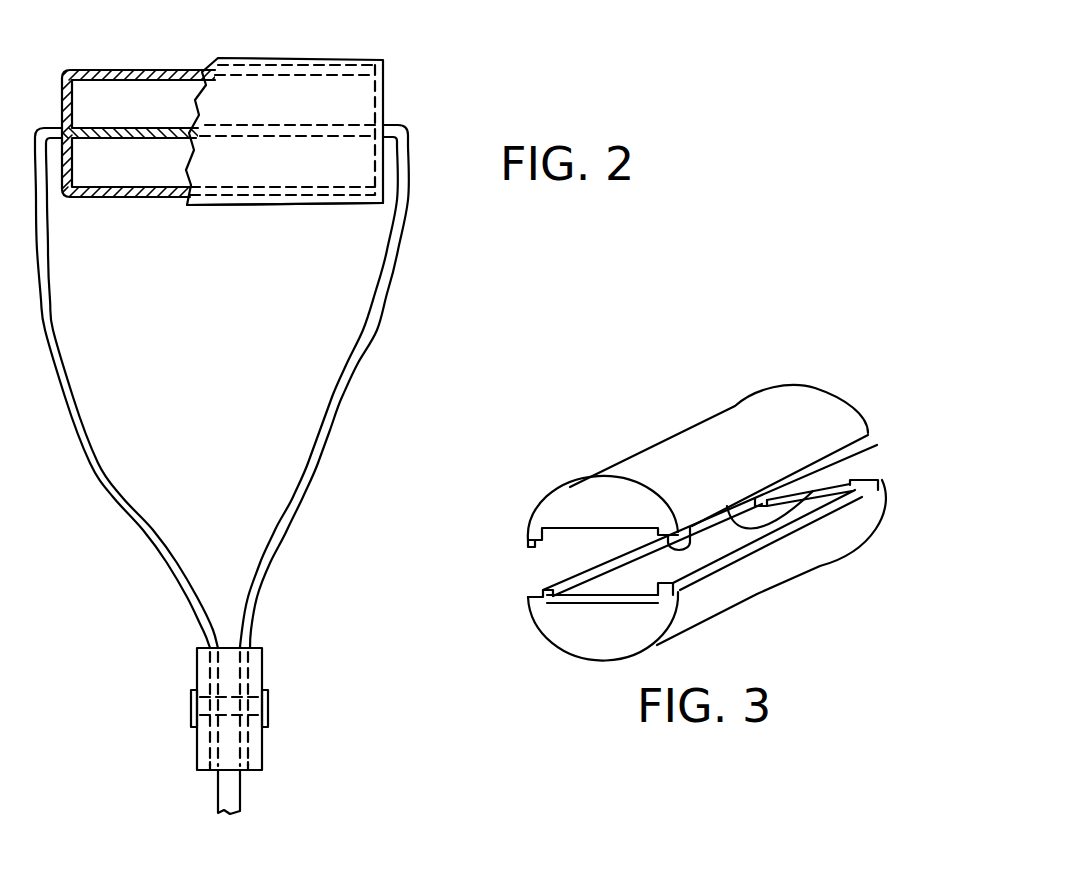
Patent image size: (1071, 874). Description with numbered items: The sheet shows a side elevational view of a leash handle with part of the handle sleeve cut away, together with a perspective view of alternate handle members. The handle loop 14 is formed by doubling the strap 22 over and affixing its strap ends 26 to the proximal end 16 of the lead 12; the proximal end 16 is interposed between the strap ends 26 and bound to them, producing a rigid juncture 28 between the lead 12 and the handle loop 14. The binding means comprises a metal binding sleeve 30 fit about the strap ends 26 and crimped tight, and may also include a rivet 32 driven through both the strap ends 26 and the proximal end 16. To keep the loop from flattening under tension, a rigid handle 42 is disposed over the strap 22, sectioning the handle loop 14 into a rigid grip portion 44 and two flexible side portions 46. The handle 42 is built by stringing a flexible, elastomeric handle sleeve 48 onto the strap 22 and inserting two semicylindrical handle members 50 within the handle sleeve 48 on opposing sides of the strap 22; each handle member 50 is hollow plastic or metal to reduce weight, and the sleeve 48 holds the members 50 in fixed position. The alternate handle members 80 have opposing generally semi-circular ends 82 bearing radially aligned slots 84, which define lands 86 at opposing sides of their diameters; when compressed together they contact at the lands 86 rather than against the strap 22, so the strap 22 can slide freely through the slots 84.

In FIG. 2, the lead 12 is at (240, 792).
In FIG. 2, the handle loop 14 is at (382, 318).
In FIG. 2, the proximal end 16 is at (231, 650).
In FIG. 2, the strap 22 is at (400, 248).
In FIG. 2, the strap ends 26 is at (210, 770).
In FIG. 2, the rigid juncture 28 is at (262, 675).
In FIG. 2, the binding sleeve 30 is at (197, 675).
In FIG. 2, the rivet 32 is at (268, 703).
In FIG. 2, the rigid handle 42 is at (222, 60).
In FIG. 2, the rigid grip portion 44 is at (217, 205).
In FIG. 2, the flexible side portions 46 is at (55, 315).
In FIG. 2, the handle sleeve 48 is at (317, 58).
In FIG. 2, the handle members 50 is at (107, 72).
In FIG. 3, the handle members 80 is at (702, 422).
In FIG. 3, the semi-circular ends 82 is at (568, 497).
In FIG. 3, the slots 84 is at (580, 530).
In FIG. 3, the lands 86 is at (532, 547).